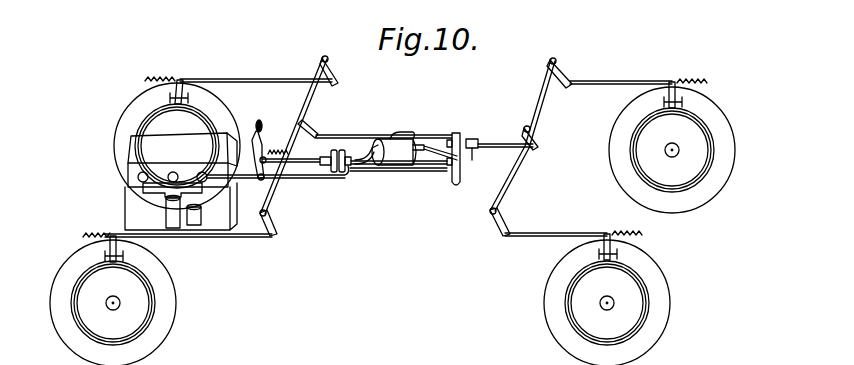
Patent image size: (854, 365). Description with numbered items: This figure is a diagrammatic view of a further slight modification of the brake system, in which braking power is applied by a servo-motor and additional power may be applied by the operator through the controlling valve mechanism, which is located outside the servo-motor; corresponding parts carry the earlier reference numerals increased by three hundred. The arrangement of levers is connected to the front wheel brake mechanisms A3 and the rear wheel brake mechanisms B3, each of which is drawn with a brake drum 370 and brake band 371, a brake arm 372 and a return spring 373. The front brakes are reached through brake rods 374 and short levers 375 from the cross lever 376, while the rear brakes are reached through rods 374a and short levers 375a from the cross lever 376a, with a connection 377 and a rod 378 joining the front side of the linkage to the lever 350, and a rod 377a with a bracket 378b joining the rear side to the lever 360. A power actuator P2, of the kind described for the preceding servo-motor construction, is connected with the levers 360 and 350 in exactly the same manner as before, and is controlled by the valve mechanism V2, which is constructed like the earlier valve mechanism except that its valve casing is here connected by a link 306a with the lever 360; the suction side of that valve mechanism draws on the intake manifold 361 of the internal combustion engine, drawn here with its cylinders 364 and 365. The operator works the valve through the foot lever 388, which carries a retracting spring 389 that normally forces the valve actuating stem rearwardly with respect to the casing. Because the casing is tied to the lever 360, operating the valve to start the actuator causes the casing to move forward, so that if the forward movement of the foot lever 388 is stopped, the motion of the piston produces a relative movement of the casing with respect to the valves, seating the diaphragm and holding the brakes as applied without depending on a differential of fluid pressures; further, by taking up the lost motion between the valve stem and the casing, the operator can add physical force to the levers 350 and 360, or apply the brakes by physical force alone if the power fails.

The front wheel brake mechanism A3 is at (145, 128).
The rear wheel brake mechanism B3 is at (700, 142).
The brake drum hub 370 is at (138, 274).
The brake drum 371 is at (150, 291).
The brake lever arm 372 is at (185, 86).
The return spring 373 is at (387, 146).
The front brake rod 374 is at (268, 254).
The rear brake rod 374a is at (628, 80).
The front short lever 375 is at (338, 72).
The rear short lever 375a is at (564, 70).
The front cross lever 376 is at (312, 108).
The rear cross lever 376a is at (516, 180).
The pump connection 377 is at (394, 138).
The rear connecting rod 377a is at (505, 156).
The connecting rod 378 is at (318, 133).
The rear lever bracket 378b is at (538, 132).
The foot lever 388 is at (258, 123).
The retracting spring 389 is at (278, 150).
The lever 350 is at (455, 134).
The lever 360 is at (473, 140).
The link 306a is at (412, 172).
The intake manifold 361 is at (138, 182).
The cylinder 364 is at (166, 211).
The cylinder 365 is at (197, 225).
The valve mechanism V2 is at (338, 174).
The power actuator P2 is at (388, 162).